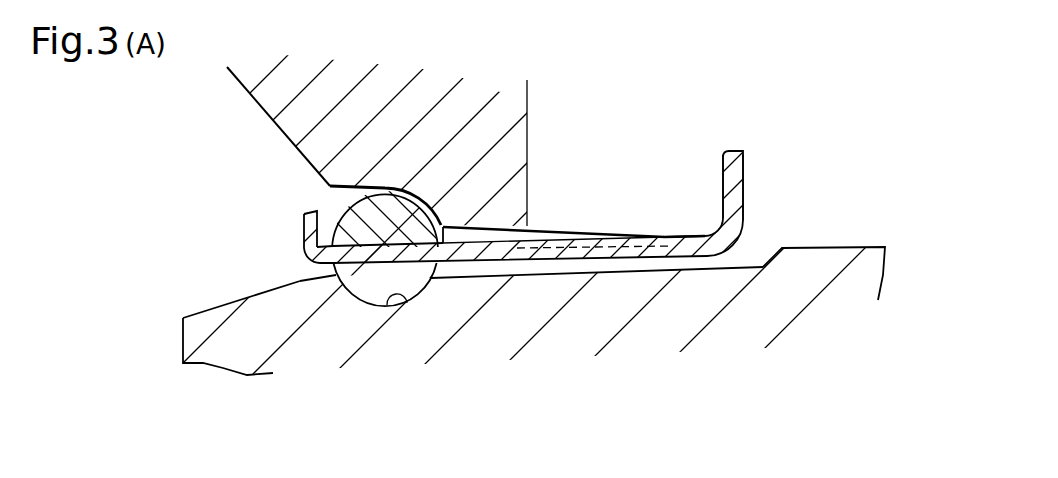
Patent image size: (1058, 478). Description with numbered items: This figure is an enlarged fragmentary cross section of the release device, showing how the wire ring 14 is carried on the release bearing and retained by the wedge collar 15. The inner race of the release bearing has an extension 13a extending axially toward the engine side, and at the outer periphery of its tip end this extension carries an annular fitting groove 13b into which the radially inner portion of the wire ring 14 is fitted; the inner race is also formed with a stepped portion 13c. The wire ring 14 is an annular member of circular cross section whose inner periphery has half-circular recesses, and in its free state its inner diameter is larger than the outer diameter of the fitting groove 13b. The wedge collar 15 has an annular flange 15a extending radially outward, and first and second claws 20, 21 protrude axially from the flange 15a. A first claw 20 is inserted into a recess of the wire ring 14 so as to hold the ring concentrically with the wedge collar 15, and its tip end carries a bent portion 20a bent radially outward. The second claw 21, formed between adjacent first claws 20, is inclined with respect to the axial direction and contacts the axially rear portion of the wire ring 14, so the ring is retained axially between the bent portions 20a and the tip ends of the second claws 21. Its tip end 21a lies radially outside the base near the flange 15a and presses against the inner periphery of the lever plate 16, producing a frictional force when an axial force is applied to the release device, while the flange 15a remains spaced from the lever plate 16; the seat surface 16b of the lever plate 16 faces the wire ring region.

The extension 13a is at (270, 325).
The annular fitting groove 13b is at (408, 303).
The stepped portion 13c is at (773, 253).
The wire ring 14 is at (334, 276).
The wedge collar 15 is at (694, 181).
The annular flange 15a is at (745, 161).
The lever plate 16 is at (260, 108).
The seat surface of block 16b is at (410, 192).
The first claw 20 is at (613, 240).
The bent portion 20a is at (302, 226).
The second claw 21 is at (538, 233).
The tip end 21a is at (461, 224).